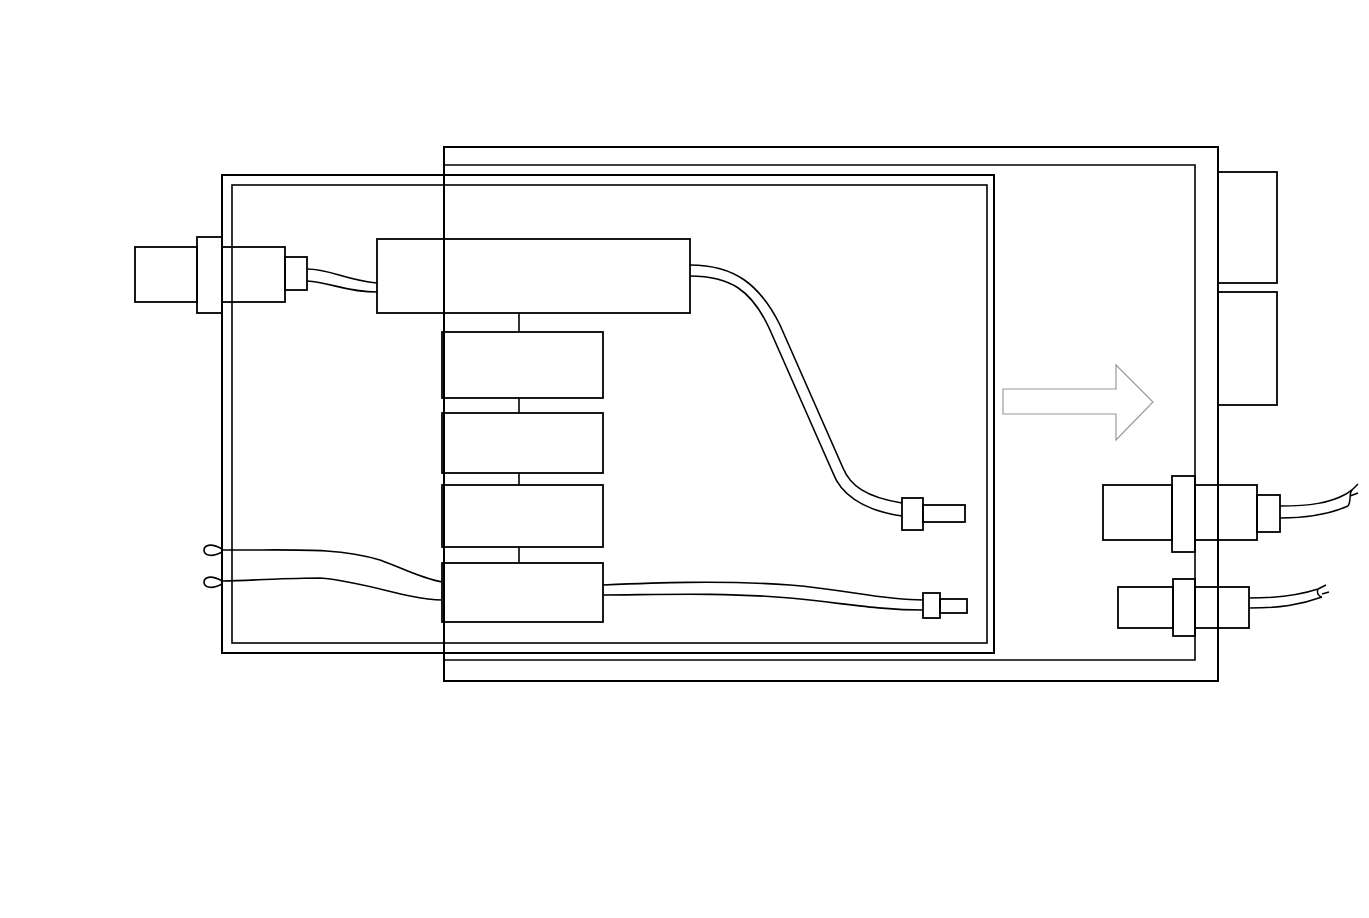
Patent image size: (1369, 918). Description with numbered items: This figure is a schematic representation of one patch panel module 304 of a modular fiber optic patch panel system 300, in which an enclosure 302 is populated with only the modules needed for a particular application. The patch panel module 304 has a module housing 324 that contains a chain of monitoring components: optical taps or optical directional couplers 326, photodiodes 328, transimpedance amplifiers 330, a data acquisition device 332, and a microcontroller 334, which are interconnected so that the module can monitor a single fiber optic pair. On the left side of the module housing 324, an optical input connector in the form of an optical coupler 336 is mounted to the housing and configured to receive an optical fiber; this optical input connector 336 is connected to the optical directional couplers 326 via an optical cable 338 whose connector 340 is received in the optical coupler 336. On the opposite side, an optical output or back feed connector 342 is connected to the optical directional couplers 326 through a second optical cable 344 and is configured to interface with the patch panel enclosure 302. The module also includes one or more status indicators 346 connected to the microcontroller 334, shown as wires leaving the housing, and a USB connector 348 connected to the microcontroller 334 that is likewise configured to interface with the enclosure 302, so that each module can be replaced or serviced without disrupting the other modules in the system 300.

The modular fiber optic patch panel system 300 is at (1168, 107).
The enclosure 302 is at (644, 135).
The patch panel module 304 is at (337, 160).
The module housing 324 is at (365, 656).
The optical directional couplers 326 is at (692, 239).
The photodiodes 328 is at (605, 360).
The transimpedance amplifiers 330 is at (605, 432).
The data acquisition device 332 is at (605, 500).
The microcontroller 334 is at (605, 570).
The optical input connector 336 is at (180, 305).
The optical cable 338 is at (355, 294).
The connector 340 is at (300, 293).
The optical output or back feed connector 342 is at (940, 500).
The optical cable 344 is at (790, 333).
The status indicators 346 is at (190, 562).
The USB connector 348 is at (947, 615).